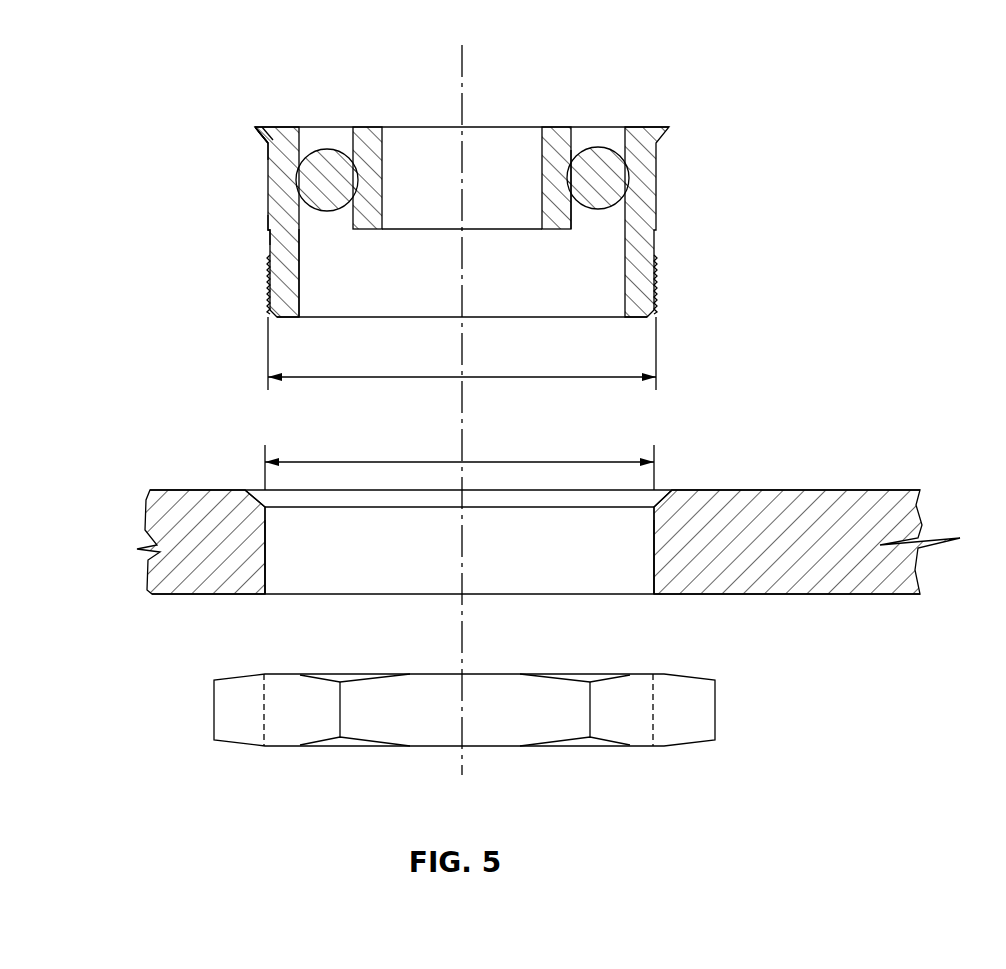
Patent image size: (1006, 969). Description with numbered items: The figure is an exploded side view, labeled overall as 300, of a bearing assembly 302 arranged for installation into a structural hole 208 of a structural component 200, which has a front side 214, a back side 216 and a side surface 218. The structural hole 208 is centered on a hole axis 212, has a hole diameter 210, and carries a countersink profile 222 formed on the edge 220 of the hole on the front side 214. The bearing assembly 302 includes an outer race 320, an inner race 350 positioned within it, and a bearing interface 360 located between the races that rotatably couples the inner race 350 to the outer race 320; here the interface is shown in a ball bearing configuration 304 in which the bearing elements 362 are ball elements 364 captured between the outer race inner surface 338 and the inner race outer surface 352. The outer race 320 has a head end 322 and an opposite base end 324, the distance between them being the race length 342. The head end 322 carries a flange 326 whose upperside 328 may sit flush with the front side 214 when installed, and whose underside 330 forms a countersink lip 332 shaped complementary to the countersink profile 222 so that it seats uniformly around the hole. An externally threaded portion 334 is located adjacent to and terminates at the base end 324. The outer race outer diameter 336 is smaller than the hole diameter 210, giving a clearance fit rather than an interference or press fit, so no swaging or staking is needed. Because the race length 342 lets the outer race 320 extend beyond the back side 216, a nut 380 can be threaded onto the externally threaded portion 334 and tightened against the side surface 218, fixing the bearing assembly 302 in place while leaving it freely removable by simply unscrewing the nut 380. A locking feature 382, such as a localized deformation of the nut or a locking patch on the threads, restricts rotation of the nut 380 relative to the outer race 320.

The structural component 200 is at (566, 546).
The structural hole 208 is at (655, 562).
The hole diameter 210 is at (522, 462).
The hole axis 212 is at (460, 615).
The front side 214 is at (895, 492).
The back side 216 is at (903, 597).
The side surface 218 is at (788, 489).
The edge 220 is at (244, 478).
The countersink profile 222 is at (665, 488).
The fitting assembly 300 is at (497, 429).
The bearing assembly 302 is at (477, 429).
The ball bearing configuration 304 is at (477, 429).
The outer race 320 is at (283, 127).
The head end 322 is at (253, 128).
The base end 324 is at (273, 317).
The flange 326 is at (246, 139).
The upperside 328 is at (262, 127).
The underside 330 is at (268, 143).
The countersink lip 332 is at (263, 140).
The externally threaded portion 334 is at (655, 258).
The outer race outer diameter 336 is at (512, 378).
The outer race inner surface 338 is at (300, 303).
The race length 342 is at (268, 220).
The inner race 350 is at (368, 127).
The inner race outer surface 352 is at (572, 217).
The bearing interface 360 is at (539, 133).
The bearing elements 362 is at (539, 179).
The ball elements 364 is at (598, 182).
The nut 380 is at (717, 705).
The locking feature 382 is at (655, 297).